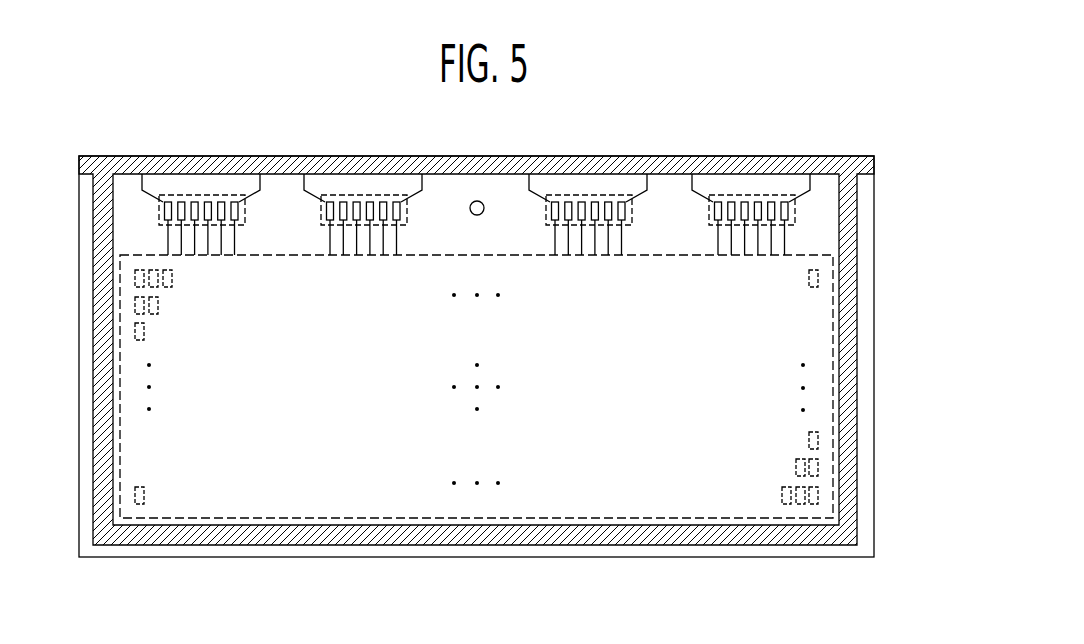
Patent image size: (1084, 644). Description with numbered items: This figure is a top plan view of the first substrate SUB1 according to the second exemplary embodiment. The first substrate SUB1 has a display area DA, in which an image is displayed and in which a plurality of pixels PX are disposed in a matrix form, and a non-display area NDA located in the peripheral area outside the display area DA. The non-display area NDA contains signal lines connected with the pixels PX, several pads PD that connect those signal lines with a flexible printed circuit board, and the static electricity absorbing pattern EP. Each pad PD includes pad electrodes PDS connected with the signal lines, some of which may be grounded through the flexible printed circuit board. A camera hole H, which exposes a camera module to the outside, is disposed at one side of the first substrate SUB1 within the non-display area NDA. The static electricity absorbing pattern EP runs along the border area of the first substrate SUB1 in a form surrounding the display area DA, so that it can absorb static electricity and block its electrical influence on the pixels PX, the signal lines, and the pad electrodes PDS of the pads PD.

The first substrate SUB1 is at (874, 355).
The static electricity absorbing pattern EP is at (827, 162).
The non-display area NDA is at (667, 196).
The pad PD is at (177, 195).
The pad electrodes PDS is at (222, 202).
The camera hole H is at (480, 200).
The display area DA is at (478, 519).
The pixels PX is at (136, 301).